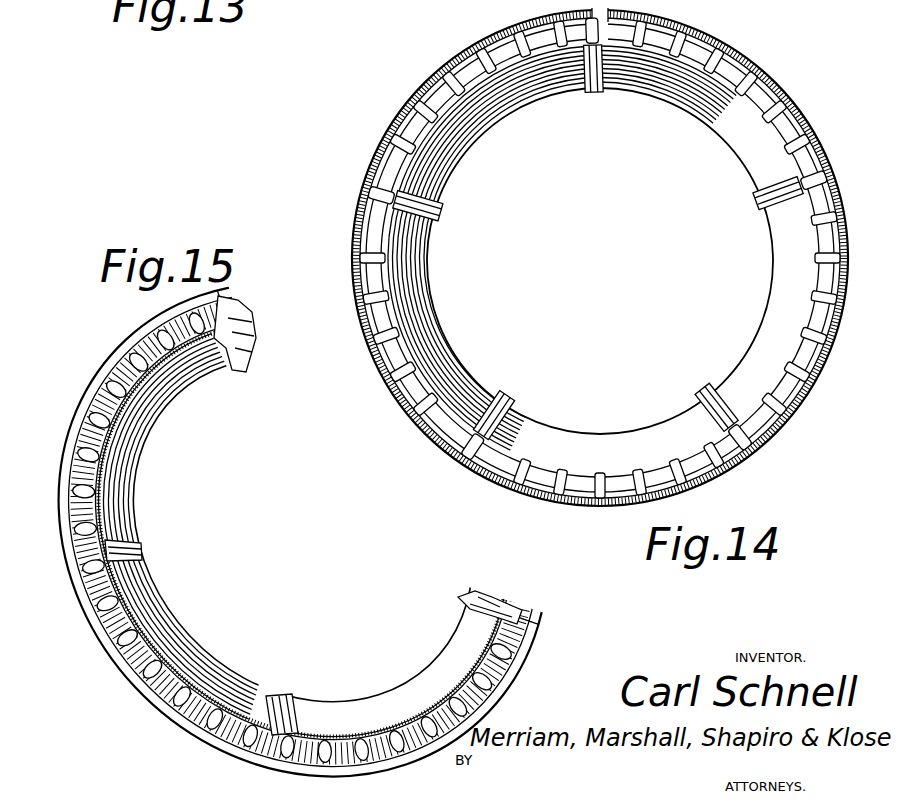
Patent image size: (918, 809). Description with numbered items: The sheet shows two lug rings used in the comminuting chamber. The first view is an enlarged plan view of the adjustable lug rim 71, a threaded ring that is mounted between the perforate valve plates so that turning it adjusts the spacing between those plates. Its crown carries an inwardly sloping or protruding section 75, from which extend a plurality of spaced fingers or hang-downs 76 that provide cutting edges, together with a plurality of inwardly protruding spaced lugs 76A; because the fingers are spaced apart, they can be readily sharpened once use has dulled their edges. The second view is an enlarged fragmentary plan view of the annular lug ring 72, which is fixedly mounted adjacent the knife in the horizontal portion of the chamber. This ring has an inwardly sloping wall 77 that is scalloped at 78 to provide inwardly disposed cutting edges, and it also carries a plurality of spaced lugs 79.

In FIG. 14, the adjustable lug rim 71 is at (352, 168).
In FIG. 14, the inwardly sloping or protruding section 75 is at (467, 132).
In FIG. 14, the spaced fingers or hang-downs 76 is at (360, 237).
In FIG. 14, the inwardly protruding spaced lugs 76A is at (583, 95).
In FIG. 15, the annular lug ring 72 is at (108, 366).
In FIG. 15, the inwardly sloping wall 77 is at (150, 612).
In FIG. 15, the scallops 78 is at (105, 425).
In FIG. 15, the spaced lugs 79 is at (235, 374).